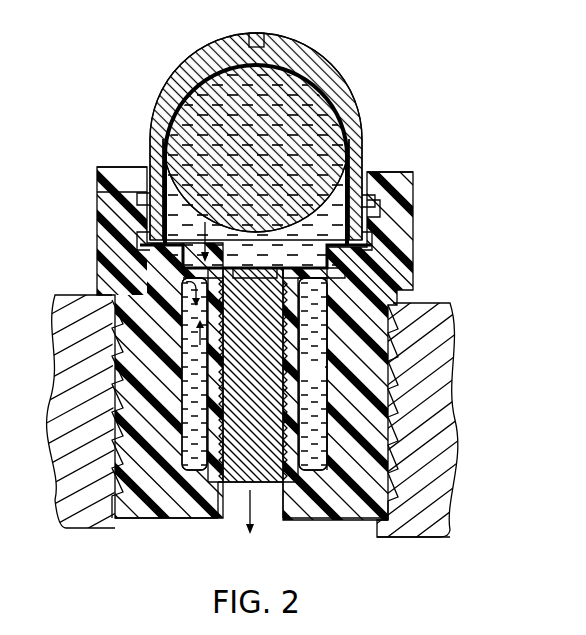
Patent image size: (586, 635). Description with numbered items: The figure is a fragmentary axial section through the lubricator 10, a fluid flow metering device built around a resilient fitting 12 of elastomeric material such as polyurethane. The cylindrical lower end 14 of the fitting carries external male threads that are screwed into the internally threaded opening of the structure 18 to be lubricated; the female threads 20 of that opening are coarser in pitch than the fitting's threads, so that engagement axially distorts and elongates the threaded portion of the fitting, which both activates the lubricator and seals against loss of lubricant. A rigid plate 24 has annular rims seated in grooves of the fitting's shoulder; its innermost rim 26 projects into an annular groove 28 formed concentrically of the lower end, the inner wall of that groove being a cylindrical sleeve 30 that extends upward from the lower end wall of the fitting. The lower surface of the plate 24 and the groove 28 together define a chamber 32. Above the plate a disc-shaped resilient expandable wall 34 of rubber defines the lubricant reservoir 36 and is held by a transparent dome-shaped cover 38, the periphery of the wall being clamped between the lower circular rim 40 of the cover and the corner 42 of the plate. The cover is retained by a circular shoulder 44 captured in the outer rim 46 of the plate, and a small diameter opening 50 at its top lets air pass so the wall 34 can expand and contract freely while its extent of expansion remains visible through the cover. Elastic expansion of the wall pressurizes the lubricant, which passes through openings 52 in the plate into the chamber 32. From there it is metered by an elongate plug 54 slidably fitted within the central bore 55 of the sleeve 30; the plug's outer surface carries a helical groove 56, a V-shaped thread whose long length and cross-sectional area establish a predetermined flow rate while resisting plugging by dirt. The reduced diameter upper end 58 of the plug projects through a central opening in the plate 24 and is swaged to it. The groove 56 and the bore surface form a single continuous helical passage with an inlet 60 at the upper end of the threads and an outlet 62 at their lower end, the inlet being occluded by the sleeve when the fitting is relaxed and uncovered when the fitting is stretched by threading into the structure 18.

The lubricator 10 is at (458, 140).
The resilient base member or fitting 12 is at (420, 242).
The cylindrical lower end 14 is at (160, 508).
The structure 18 is at (452, 302).
The female threads 20 is at (375, 530).
The rigid plate 24 is at (297, 272).
The innermost rim 26 is at (325, 247).
The annular groove 28 is at (318, 300).
The cylindrical sleeve 30 is at (318, 333).
The chamber 32 is at (316, 369).
The resilient expandable wall 34 is at (335, 106).
The lubricant reservoir or chamber 36 is at (262, 147).
The dome-shaped cover 38 is at (340, 68).
The lower circular rim 40 is at (167, 233).
The corner 42 is at (140, 246).
The circular shoulder 44 is at (140, 195).
The outer rim 46 is at (98, 196).
The small diameter opening 50 is at (256, 33).
The openings 52 is at (237, 268).
The elongate plug 54 is at (230, 508).
The central bore 55 is at (218, 507).
The helical groove 56 is at (318, 380).
The reduced diameter upper end 58 is at (268, 262).
The inlet 60 is at (320, 285).
The outlet 62 is at (275, 490).